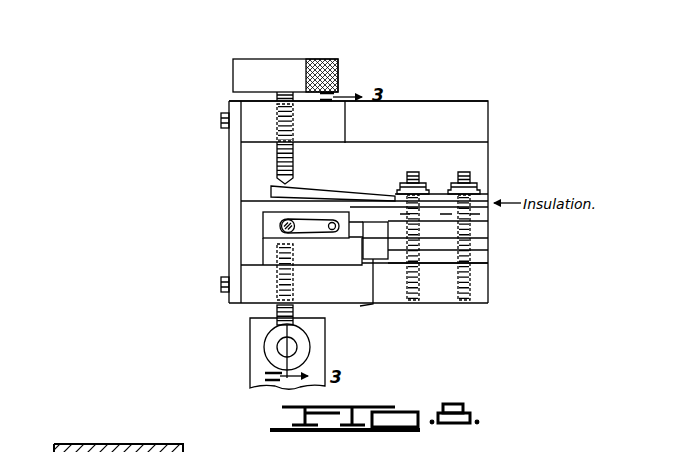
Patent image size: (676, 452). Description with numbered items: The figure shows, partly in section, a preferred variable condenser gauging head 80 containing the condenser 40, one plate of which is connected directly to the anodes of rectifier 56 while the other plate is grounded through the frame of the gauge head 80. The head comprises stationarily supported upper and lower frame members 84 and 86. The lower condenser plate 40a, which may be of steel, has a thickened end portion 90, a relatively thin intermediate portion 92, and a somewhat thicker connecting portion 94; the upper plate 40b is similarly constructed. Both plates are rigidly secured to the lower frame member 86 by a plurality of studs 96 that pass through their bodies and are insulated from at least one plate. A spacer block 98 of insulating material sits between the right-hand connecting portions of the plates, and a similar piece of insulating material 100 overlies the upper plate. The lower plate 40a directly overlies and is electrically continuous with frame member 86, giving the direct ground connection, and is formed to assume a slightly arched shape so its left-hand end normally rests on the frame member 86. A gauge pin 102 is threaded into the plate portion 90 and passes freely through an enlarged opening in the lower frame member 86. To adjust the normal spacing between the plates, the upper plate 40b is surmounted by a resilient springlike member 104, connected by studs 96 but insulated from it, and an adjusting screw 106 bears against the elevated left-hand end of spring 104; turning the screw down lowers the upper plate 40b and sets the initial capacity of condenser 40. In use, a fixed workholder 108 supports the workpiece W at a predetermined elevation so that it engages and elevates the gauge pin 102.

The adjusting screw 106 is at (343, 60).
The gauge head 80 is at (428, 100).
The upper frame member 84 is at (446, 112).
The resilient springlike member 104 is at (323, 188).
The studs 96 is at (466, 171).
The insulating material 100 is at (490, 197).
The spacer block 98 is at (493, 230).
The connecting portion 94 is at (492, 247).
The lower condenser plate 40a is at (492, 258).
The condenser 40 is at (493, 264).
The upper plate 40b is at (263, 230).
The thickened end portion 90 is at (268, 245).
The rectifier 56 is at (297, 219).
The intermediate portion 92 is at (366, 278).
The lower frame member 86 is at (387, 304).
The gauge pin 102 is at (276, 308).
The workpiece W is at (266, 343).
The workholder 108 is at (250, 364).